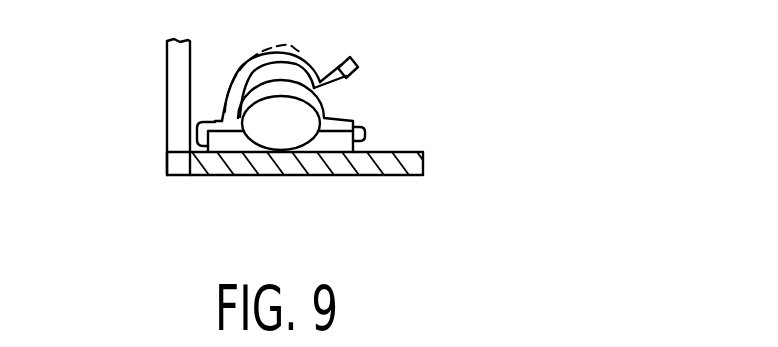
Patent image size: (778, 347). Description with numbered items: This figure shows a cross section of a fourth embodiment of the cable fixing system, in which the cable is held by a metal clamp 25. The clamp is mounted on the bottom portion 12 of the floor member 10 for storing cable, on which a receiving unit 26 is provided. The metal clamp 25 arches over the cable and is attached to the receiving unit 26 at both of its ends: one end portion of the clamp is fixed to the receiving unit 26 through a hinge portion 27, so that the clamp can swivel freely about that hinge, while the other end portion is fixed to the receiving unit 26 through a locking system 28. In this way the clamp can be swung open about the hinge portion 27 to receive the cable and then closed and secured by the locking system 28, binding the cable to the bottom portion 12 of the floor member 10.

The floor member for storing cable 10 is at (152, 66).
The bottom portion 12 is at (313, 166).
The metal clamp 25 is at (320, 100).
The receiving unit 26 is at (228, 146).
The hinge portion 27 is at (196, 126).
The locking system 28 is at (367, 137).